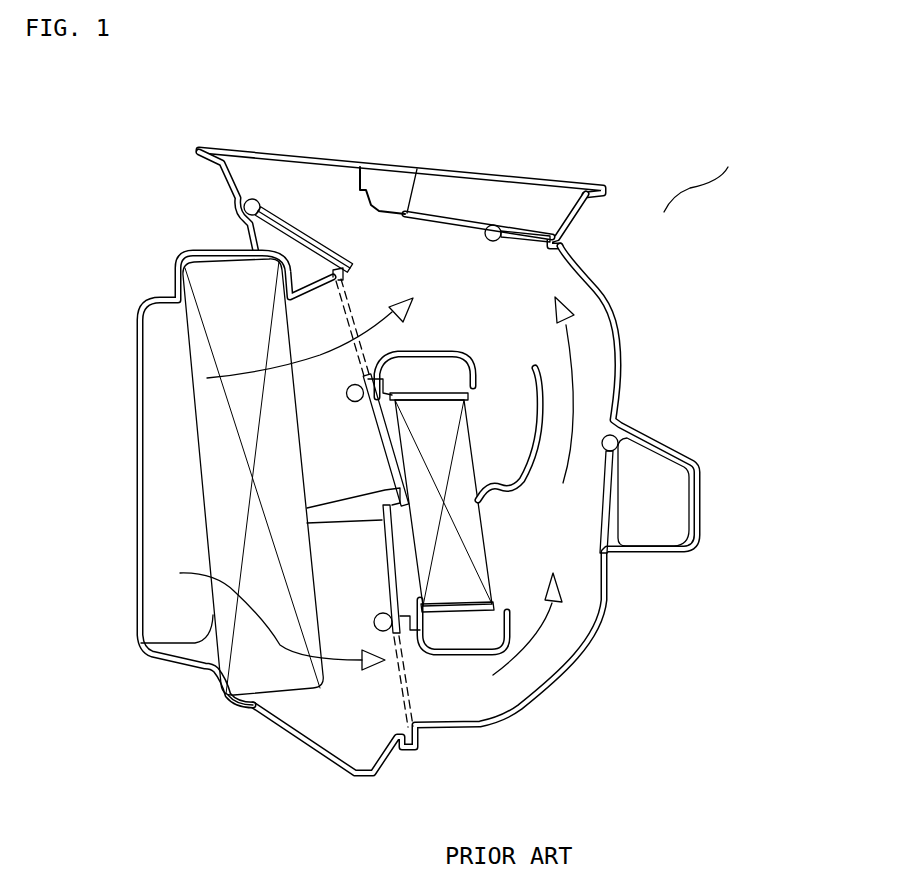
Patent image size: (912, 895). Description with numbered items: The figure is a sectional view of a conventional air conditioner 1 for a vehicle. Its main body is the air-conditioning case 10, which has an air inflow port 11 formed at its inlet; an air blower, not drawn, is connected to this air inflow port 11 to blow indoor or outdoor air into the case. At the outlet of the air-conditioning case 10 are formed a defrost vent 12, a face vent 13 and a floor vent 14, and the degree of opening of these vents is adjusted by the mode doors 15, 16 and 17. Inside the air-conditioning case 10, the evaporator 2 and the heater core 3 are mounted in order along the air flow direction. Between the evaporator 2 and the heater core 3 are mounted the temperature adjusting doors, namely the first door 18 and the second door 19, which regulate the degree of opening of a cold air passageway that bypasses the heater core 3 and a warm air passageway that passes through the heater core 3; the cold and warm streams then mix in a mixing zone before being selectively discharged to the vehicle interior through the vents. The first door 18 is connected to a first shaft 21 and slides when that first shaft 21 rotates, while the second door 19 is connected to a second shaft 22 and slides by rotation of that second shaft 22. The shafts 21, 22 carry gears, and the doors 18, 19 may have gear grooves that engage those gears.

The air conditioner 1 is at (664, 212).
The evaporator 2 is at (223, 487).
The heater core 3 is at (455, 590).
The air-conditioning case 10 is at (604, 298).
The air inflow port 11 is at (163, 608).
The defrost vent 12 is at (300, 180).
The face vent 13 is at (463, 193).
The floor vent 14 is at (657, 492).
The mode door 15 is at (286, 236).
The mode door 16 is at (510, 238).
The mode door 17 is at (607, 512).
The first door 18 is at (380, 427).
The second door 19 is at (387, 567).
The first shaft 21 is at (348, 393).
The second shaft 22 is at (375, 623).